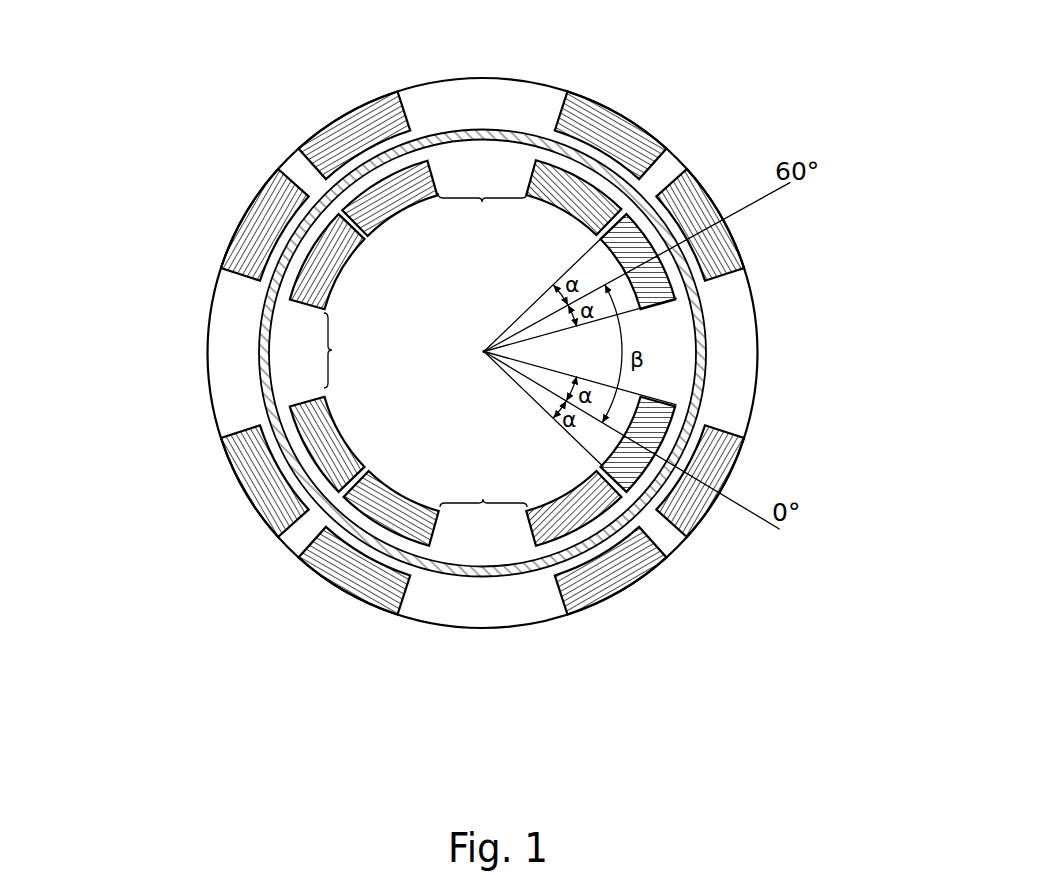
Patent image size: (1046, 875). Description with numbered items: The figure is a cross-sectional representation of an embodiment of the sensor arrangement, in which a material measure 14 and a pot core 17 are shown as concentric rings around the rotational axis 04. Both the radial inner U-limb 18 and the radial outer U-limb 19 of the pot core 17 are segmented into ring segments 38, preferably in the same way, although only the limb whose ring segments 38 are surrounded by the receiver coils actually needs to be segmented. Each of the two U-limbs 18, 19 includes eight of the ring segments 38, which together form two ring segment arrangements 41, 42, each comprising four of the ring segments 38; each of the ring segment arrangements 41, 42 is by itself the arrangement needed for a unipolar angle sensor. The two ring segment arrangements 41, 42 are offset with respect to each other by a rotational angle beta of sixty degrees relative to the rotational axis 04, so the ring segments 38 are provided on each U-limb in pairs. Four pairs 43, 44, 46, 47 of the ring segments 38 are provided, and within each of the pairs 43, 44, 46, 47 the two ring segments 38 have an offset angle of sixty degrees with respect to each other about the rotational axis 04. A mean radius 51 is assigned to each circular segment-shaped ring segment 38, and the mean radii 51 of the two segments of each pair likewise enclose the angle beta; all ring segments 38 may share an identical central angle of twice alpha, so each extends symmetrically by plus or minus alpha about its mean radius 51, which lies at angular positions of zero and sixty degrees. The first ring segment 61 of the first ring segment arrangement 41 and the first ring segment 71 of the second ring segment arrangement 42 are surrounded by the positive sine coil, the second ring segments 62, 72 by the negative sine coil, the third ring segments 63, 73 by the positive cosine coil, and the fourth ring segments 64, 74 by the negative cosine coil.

The rotational axis 04 is at (484, 352).
The material measure 14 is at (493, 420).
The pot core 17 is at (490, 365).
The radial inner U-limb 18 is at (293, 395).
The radial outer U-limb 19 is at (316, 573).
The ring segments 38 is at (327, 148).
The first ring segment arrangement 41 is at (490, 387).
The second ring segment arrangement 42 is at (489, 346).
The pair of ring segments 43 is at (660, 412).
The pair of ring segments 44 is at (482, 214).
The pair of ring segments 46 is at (348, 350).
The pair of ring segments 47 is at (483, 487).
The mean radius 51 is at (735, 207).
The first ring segment 61 is at (657, 412).
The second ring segment 62 is at (300, 278).
The third ring segment 63 is at (545, 176).
The fourth ring segment 64 is at (421, 530).
The first ring segment 71 is at (657, 298).
The second ring segment 72 is at (304, 448).
The third ring segment 73 is at (432, 190).
The fourth ring segment 74 is at (575, 520).